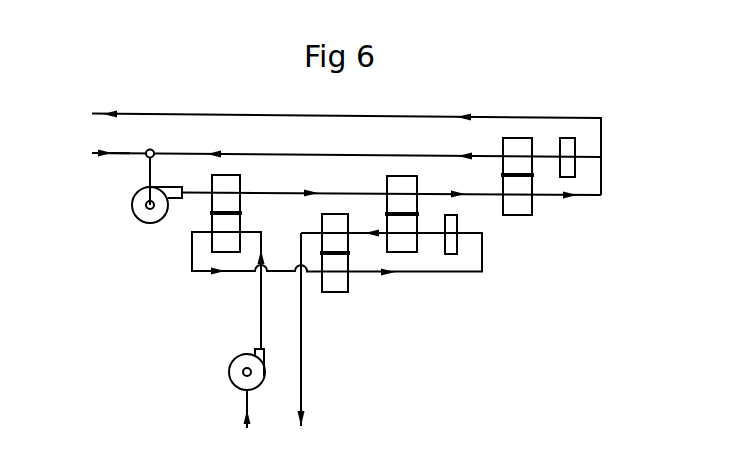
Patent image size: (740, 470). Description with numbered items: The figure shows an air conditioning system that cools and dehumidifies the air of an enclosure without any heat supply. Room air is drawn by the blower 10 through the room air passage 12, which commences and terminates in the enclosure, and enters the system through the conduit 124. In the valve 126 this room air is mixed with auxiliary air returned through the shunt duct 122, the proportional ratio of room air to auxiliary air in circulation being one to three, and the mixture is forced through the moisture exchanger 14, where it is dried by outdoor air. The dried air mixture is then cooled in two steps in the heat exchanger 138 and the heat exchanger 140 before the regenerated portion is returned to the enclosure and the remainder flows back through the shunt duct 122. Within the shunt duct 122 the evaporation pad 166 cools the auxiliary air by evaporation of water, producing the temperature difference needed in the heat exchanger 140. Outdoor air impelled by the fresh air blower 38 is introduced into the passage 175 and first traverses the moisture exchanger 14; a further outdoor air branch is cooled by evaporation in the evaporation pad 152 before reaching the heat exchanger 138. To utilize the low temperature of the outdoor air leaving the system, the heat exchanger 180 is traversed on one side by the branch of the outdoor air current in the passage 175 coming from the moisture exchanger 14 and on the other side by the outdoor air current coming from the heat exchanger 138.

The blower 10 is at (137, 217).
The room air passage 12 is at (482, 116).
The moisture exchanger 14 is at (228, 178).
The fresh air blower 38 is at (232, 372).
The shunt duct 122 is at (270, 153).
The conduit 124 is at (113, 155).
The valve 126 is at (152, 149).
The heat exchanger 138 is at (397, 178).
The heat exchanger 140 is at (520, 140).
The evaporation pad 152 is at (453, 222).
The evaporation pad 166 is at (567, 143).
The passage 175 is at (420, 273).
The heat exchanger 180 is at (337, 283).